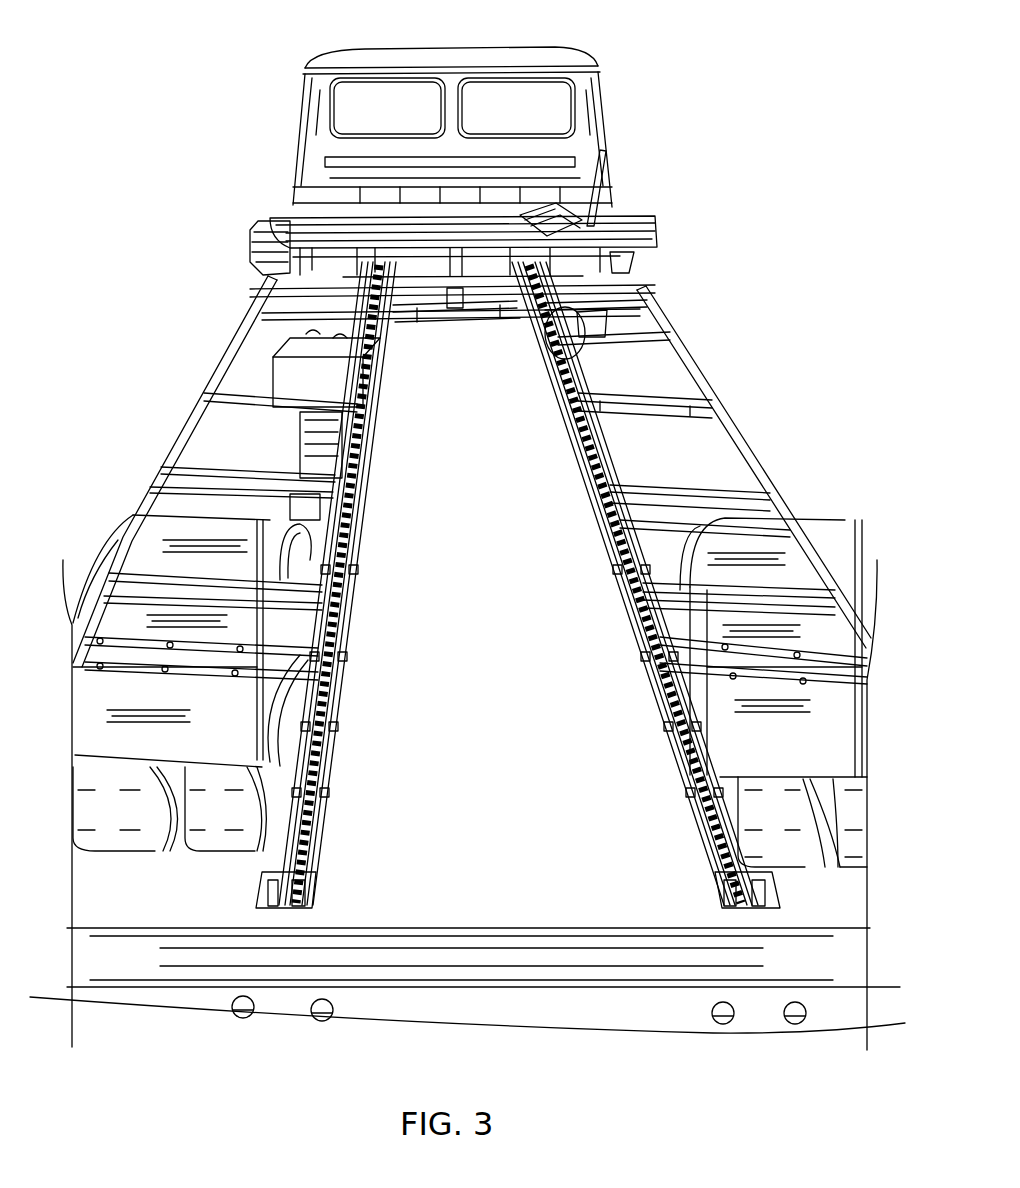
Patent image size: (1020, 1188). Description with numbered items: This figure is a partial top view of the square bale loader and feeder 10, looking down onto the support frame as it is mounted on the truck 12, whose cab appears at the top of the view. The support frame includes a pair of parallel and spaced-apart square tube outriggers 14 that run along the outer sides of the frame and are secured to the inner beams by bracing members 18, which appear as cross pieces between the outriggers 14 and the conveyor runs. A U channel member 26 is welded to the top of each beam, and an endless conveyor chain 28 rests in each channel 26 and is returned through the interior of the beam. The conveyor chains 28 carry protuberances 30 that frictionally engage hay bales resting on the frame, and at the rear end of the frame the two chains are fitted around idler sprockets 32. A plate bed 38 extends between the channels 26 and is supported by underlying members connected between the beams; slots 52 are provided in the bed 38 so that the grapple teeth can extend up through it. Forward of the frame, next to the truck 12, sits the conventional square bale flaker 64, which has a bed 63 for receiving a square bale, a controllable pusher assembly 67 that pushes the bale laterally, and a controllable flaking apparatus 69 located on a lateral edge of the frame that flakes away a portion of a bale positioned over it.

The square bale loader and feeder 10 is at (178, 369).
The truck 12 is at (284, 160).
The square tube outriggers 14 is at (190, 421).
The bracing members 18 is at (243, 403).
The U channel member 26 is at (287, 523).
The endless conveyor chain 28 is at (287, 480).
The protuberances 30 is at (360, 497).
The idler sprockets 32 is at (280, 890).
The plate bed 38 is at (498, 632).
The slots 52 is at (500, 318).
The bed 63 is at (590, 226).
The square bale flaker 64 is at (262, 229).
The pusher assembly 67 is at (604, 157).
The flaking apparatus 69 is at (250, 263).